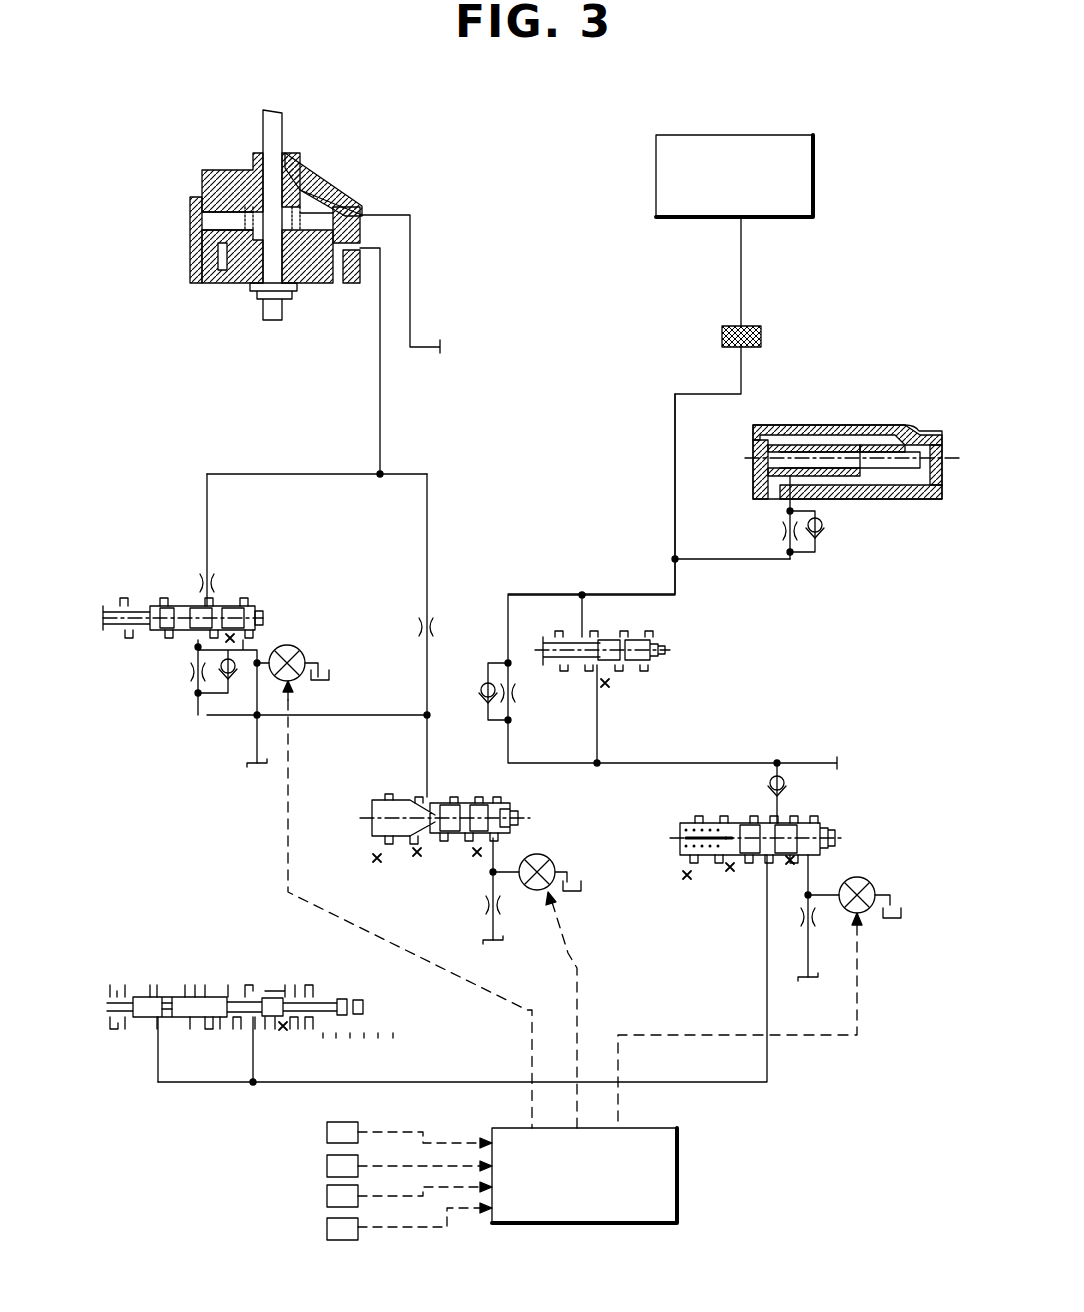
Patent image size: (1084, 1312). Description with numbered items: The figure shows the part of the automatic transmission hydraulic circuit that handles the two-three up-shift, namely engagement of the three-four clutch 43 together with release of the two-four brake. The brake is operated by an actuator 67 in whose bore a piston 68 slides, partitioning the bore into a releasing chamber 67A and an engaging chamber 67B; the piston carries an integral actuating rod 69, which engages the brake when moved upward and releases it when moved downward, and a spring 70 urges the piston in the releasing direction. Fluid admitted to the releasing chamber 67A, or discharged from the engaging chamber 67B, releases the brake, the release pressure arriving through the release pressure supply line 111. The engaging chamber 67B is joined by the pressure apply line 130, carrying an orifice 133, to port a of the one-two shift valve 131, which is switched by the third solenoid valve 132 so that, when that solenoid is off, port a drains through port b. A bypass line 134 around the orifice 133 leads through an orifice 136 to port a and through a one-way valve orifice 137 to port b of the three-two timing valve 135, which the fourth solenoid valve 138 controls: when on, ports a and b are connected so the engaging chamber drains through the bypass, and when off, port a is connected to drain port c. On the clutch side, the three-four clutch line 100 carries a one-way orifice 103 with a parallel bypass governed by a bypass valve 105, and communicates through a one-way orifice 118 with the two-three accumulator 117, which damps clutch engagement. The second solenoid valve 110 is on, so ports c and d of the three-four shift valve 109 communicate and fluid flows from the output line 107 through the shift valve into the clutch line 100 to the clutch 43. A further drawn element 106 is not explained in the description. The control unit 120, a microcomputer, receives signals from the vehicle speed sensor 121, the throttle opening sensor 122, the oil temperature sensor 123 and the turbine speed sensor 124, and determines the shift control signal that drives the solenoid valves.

The 3-4 clutch 43 is at (656, 185).
The actuator 67 is at (331, 178).
The releasing chamber 67A is at (217, 218).
The engaging chamber 67B is at (207, 252).
The piston 68 is at (310, 287).
The actuating rod 69 is at (282, 125).
The spring 70 is at (300, 208).
The 3-4 clutch line 100 is at (675, 470).
The one-way orifice 103 is at (508, 710).
The bypass valve 105 is at (667, 650).
The manual valve 106 is at (190, 972).
The output line 107 is at (767, 1060).
The 3-4 shift valve 109 is at (835, 825).
The second solenoid valve 110 is at (862, 877).
The release pressure supply line 111 is at (410, 298).
The 2-3 accumulator 117 is at (825, 425).
The one-way orifice 118 is at (790, 555).
The control unit 120 is at (677, 1178).
The sensor 121 is at (327, 1132).
The sensor 122 is at (327, 1163).
The sensor 123 is at (327, 1193).
The sensor 124 is at (327, 1226).
The pressure apply line 130 is at (427, 520).
The 1-2 shift valve 131 is at (363, 860).
The third solenoid valve 132 is at (547, 859).
The orifice 133 is at (427, 620).
The bypass line 134 is at (207, 500).
The 3-2 timing valve 135 is at (140, 650).
The orifice 136 is at (213, 577).
The one-way valve orifice 137 is at (213, 690).
The fourth solenoid valve 138 is at (305, 650).